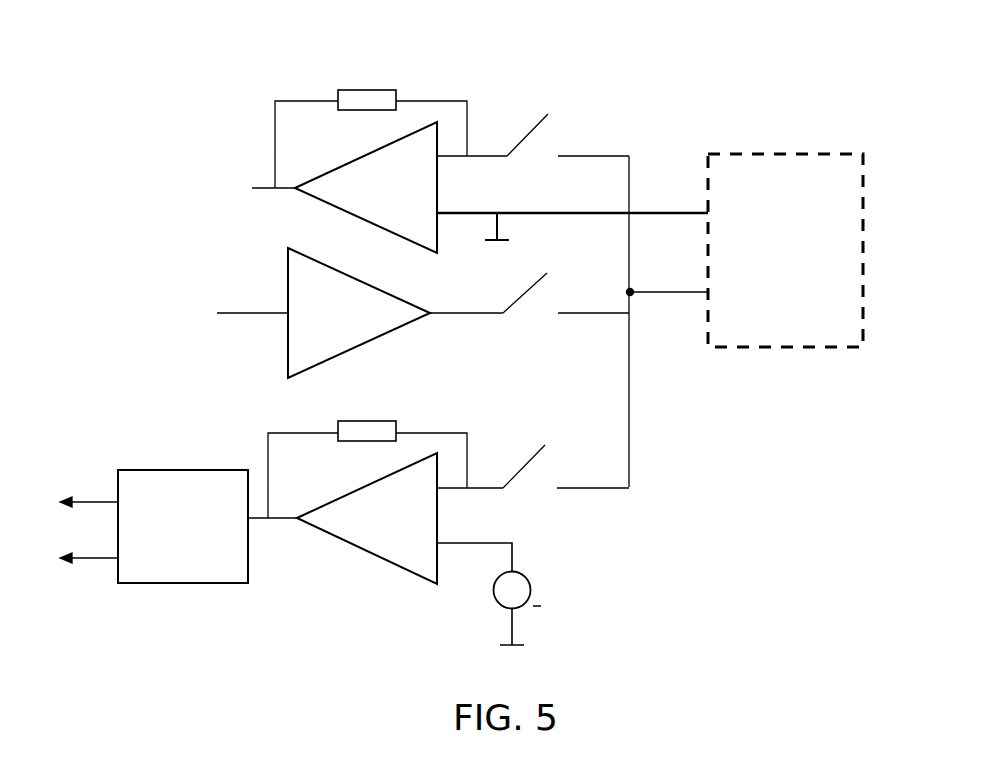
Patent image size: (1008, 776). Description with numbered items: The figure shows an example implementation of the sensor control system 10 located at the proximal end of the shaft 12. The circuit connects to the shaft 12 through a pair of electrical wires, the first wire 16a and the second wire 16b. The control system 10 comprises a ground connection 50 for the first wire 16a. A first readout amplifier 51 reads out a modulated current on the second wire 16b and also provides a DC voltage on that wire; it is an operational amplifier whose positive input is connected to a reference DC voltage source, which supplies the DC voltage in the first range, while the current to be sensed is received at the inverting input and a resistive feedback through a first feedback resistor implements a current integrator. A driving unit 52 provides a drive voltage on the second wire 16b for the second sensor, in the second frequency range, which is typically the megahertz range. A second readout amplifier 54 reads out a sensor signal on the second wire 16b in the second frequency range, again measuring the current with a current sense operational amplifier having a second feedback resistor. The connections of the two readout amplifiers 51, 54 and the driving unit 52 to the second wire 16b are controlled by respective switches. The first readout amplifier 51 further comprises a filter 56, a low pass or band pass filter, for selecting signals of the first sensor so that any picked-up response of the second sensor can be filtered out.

The control system 10 is at (216, 220).
The shaft 12 is at (733, 157).
The first electrical wire 16a is at (675, 212).
The second electrical wire 16b is at (658, 293).
The ground connection 50 is at (498, 222).
The first readout amplifier 51 is at (368, 547).
The driving unit 52 is at (287, 338).
The second readout amplifier 54 is at (444, 147).
The filter 56 is at (192, 584).